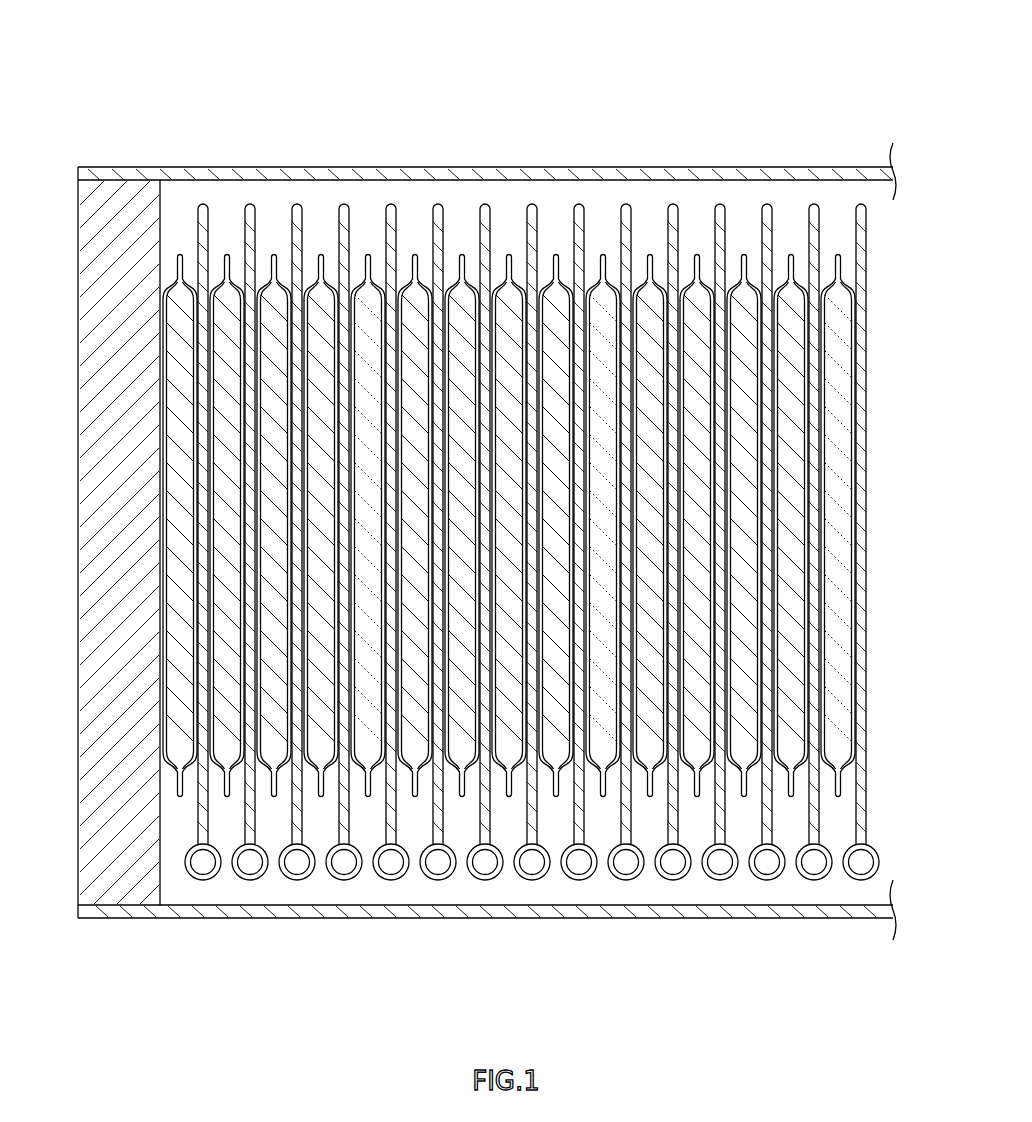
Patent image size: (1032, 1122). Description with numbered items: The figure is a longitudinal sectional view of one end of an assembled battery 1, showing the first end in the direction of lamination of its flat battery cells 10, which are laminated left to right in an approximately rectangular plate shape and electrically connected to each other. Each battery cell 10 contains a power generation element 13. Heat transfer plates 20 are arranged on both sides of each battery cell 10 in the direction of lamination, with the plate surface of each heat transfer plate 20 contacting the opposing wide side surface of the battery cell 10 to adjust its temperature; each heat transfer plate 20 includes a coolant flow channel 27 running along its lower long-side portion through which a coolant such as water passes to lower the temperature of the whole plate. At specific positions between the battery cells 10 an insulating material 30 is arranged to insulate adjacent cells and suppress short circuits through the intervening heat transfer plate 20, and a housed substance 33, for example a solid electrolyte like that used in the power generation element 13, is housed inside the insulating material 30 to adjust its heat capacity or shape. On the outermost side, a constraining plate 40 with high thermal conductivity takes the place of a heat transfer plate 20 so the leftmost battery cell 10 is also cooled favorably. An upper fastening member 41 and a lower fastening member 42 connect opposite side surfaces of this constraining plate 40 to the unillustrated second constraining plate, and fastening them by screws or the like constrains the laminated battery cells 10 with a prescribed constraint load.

The assembled battery 1 is at (484, 75).
The battery cell 10 is at (185, 230).
The power generation element 13 is at (180, 474).
The heat transfer plate 20 is at (252, 205).
The coolant flow channel 27 is at (252, 862).
The insulating material 30 is at (373, 230).
The housed substance 33 is at (835, 430).
The constraining plate 40 is at (115, 196).
The fastening member 41 is at (740, 172).
The fastening member 42 is at (740, 910).